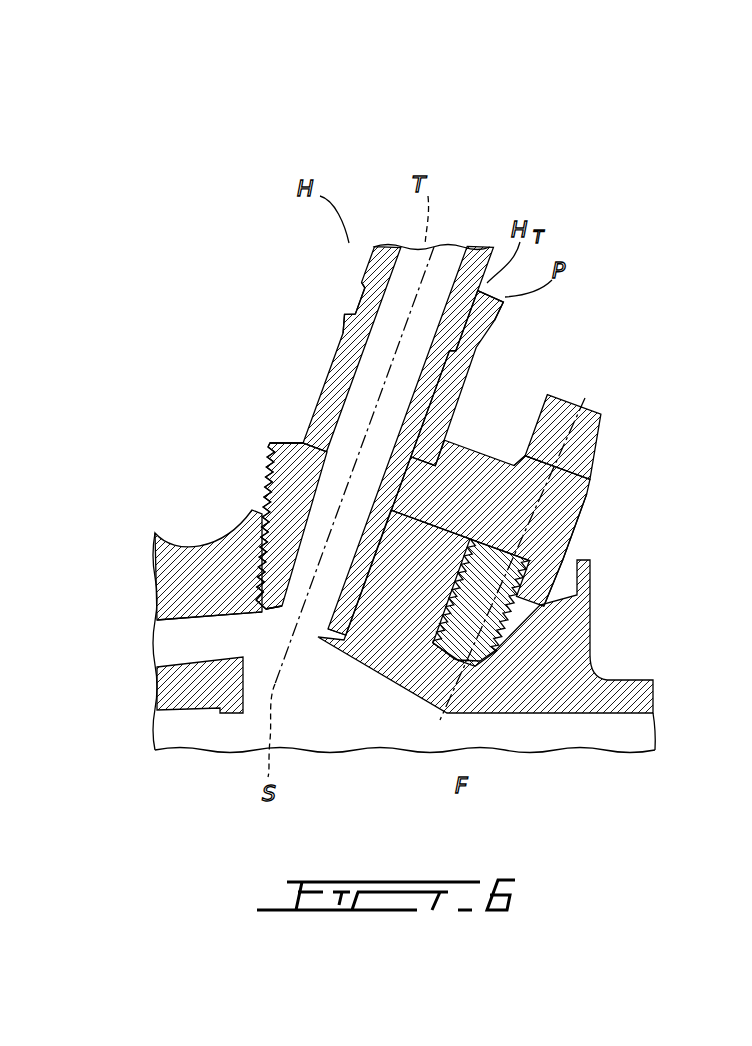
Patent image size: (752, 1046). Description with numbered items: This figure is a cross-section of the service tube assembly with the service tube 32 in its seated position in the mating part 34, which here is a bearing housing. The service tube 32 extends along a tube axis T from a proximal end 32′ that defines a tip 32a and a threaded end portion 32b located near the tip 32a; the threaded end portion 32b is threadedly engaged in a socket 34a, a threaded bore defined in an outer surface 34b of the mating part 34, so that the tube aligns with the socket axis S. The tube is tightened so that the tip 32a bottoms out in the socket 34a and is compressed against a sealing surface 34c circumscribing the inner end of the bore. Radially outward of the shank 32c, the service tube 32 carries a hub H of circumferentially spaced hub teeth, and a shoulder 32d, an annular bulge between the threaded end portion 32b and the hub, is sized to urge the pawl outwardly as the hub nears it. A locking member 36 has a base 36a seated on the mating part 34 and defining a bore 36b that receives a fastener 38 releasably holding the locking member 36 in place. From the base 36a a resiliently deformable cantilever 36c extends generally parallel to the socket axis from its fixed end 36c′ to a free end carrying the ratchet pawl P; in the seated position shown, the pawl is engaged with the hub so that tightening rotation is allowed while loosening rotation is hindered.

The service tube 32 is at (338, 122).
The proximal end 32′ is at (312, 655).
The tip 32a is at (257, 573).
The threaded end portion 32b is at (263, 476).
The shank 32c is at (360, 292).
The shoulder 32d is at (352, 314).
The mating part 34 is at (633, 697).
The threaded bore (socket) 34a is at (267, 513).
The outer surface 34b is at (281, 446).
The sealing surface 34c is at (265, 616).
The locking member 36 is at (636, 298).
The base 36a is at (580, 503).
The bore 36b is at (545, 522).
The cantilever 36c is at (468, 390).
The fixed end 36c′ is at (543, 442).
The fastener 38 is at (587, 442).